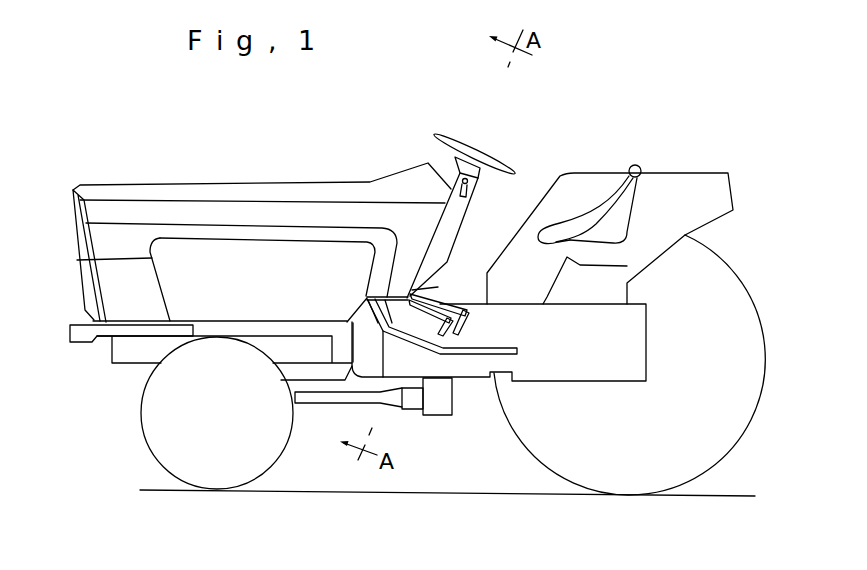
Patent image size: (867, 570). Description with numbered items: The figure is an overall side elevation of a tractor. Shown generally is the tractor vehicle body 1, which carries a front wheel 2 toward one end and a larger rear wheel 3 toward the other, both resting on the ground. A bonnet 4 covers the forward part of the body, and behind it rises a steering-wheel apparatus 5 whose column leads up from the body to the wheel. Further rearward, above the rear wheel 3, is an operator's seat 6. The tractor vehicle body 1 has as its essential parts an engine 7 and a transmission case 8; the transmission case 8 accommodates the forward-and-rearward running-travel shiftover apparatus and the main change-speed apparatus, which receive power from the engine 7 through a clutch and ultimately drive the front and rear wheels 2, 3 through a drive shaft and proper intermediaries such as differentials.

The tractor vehicle body 1 is at (544, 398).
The front wheel 2 is at (232, 479).
The rear wheel 3 is at (651, 483).
The bonnet 4 is at (277, 190).
The steering-wheel apparatus 5 is at (435, 124).
The operator's seat 6 is at (626, 163).
The engine 7 is at (317, 372).
The transmission case 8 is at (600, 372).